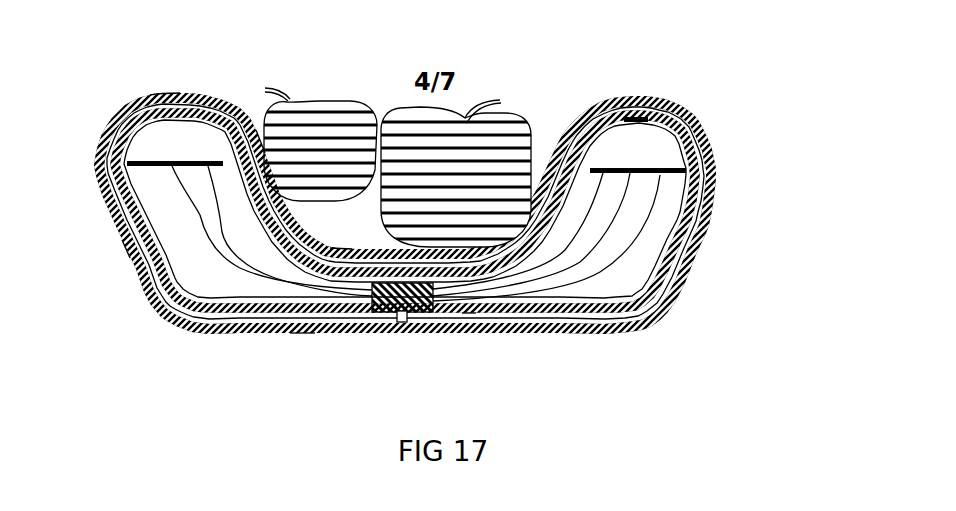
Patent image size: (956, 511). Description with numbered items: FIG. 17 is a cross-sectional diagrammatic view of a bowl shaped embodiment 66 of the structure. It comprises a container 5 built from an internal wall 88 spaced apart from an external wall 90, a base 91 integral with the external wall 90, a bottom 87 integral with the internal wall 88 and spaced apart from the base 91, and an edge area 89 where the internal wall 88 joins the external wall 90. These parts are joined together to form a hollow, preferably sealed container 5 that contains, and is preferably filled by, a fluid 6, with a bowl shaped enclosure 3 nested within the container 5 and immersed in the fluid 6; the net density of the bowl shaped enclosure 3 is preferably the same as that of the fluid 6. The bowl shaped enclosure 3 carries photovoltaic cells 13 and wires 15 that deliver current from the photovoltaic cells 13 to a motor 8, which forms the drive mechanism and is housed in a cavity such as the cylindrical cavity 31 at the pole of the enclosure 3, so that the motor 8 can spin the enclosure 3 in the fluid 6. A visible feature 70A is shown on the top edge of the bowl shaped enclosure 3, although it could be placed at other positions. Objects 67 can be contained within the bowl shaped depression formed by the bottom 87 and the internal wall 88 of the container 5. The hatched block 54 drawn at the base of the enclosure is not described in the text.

The bowl shaped embodiment 66 is at (449, 215).
The container 5 is at (662, 295).
The fluid 6 is at (670, 255).
The bowl shaped enclosure 3 is at (677, 237).
The wires 15 is at (222, 232).
The photovoltaic cells 13 is at (150, 162).
The visible feature 70A is at (640, 116).
The objects 67 is at (420, 107).
The sealing block 54 is at (383, 328).
The motor 8 is at (413, 311).
The cylindrical cavity 31 is at (470, 313).
The edge area 89 is at (171, 92).
The internal wall 88 is at (258, 140).
The bottom 87 is at (340, 247).
The external wall 90 is at (126, 259).
The base 91 is at (302, 337).